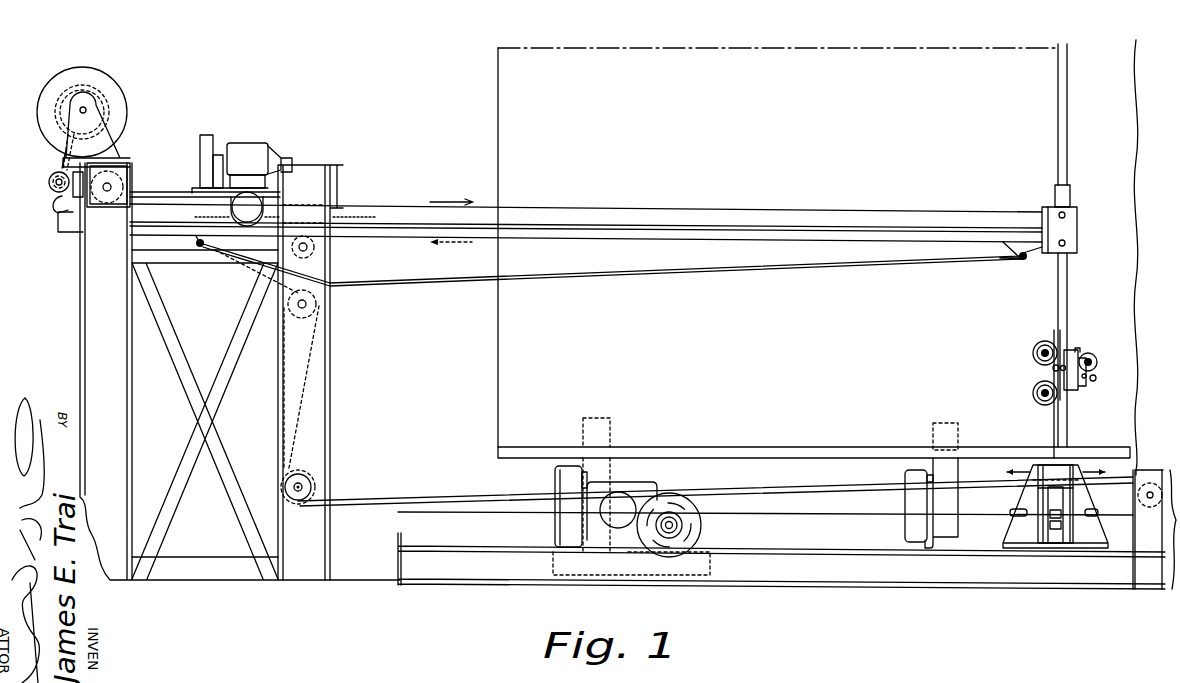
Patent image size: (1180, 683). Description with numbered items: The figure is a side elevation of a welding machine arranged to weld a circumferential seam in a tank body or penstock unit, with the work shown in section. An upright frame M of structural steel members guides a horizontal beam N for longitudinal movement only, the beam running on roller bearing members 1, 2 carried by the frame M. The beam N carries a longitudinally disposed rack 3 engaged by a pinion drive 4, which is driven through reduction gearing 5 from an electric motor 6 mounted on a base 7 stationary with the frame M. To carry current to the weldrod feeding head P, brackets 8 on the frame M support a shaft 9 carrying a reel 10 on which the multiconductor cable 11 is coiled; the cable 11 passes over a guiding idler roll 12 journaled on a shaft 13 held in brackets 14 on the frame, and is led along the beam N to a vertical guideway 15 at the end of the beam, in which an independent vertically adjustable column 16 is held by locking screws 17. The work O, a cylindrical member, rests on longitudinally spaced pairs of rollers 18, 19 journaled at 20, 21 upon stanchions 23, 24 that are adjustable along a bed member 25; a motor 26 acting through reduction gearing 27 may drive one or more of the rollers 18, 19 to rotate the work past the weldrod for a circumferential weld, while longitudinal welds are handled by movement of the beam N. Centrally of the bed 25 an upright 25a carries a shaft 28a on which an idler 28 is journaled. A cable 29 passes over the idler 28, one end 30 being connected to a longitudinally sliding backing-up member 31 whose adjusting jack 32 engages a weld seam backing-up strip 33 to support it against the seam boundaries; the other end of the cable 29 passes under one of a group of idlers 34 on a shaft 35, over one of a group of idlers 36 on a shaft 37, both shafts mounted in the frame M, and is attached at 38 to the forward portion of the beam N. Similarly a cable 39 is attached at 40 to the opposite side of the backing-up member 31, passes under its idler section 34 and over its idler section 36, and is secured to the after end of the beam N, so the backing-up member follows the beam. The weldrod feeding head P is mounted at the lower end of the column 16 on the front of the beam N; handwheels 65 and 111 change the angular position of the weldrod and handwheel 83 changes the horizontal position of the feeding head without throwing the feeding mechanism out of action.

The roller bearing member 1 is at (132, 167).
The roller bearing member 2 is at (316, 252).
The rack 3 is at (370, 206).
The pinion drive 4 is at (245, 214).
The reduction gearing 5 is at (207, 135).
The electric motor 6 is at (248, 143).
The base 7 is at (163, 192).
The brackets 8 is at (100, 133).
The shaft 9 is at (86, 110).
The reel 10 is at (88, 66).
The multiconductor cable 11 is at (64, 162).
The guiding idler roll 12 is at (53, 191).
The shaft 13 is at (50, 180).
The brackets 14 is at (63, 218).
The vertical guideway 15 is at (1078, 234).
The vertically adjustable column 16 is at (1071, 188).
The locking screws 17 is at (1066, 214).
The rollers 18 is at (612, 423).
The rollers 19 is at (935, 425).
The journal 20 is at (553, 480).
The journal 21 is at (903, 478).
The stanchion 23 is at (553, 524).
The stanchion 24 is at (905, 520).
The bed member 25 is at (770, 575).
The upright 25a is at (1151, 570).
The motor 26 is at (698, 525).
The reduction gearing 27 is at (643, 483).
The idler 28 is at (1135, 491).
The shaft 28a is at (1169, 438).
The cable 29 is at (1150, 483).
The cable end 30 is at (1090, 522).
The backing-up member 31 is at (1022, 532).
The adjusting jack 32 is at (1057, 535).
The weld seam backing-up strip 33 is at (1068, 460).
The idlers 34 is at (318, 472).
The shaft 35 is at (313, 486).
The idlers 36 is at (317, 304).
The shaft 37 is at (308, 310).
The cable attachment 38 is at (1022, 261).
The cable 39 is at (811, 505).
The cable attachment 40 is at (1018, 516).
The handwheel 65 is at (1040, 399).
The handwheel 83 is at (1040, 344).
The handwheel 111 is at (1091, 357).
The upright frame M is at (82, 314).
The horizontal beam N is at (673, 212).
The work O is at (749, 447).
The weldrod feeding head P is at (1046, 370).